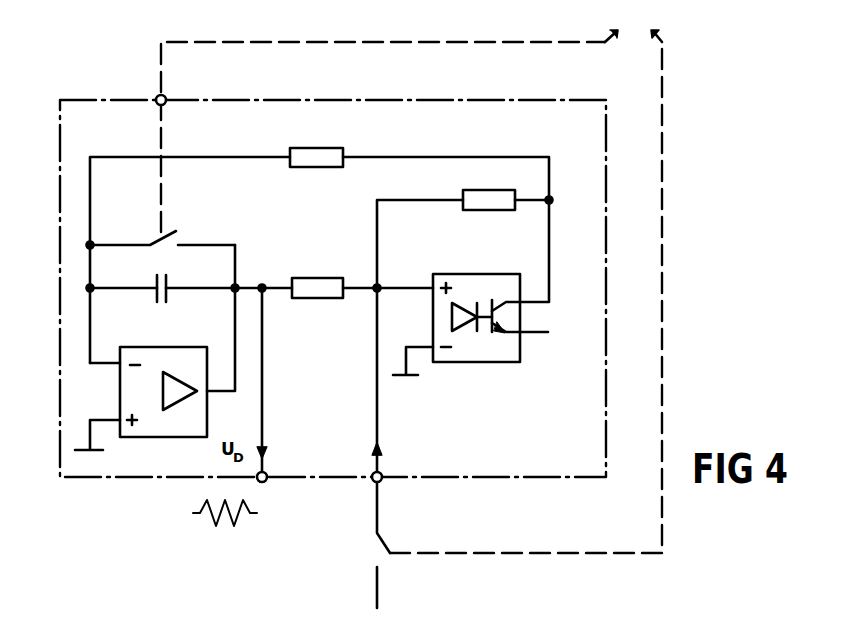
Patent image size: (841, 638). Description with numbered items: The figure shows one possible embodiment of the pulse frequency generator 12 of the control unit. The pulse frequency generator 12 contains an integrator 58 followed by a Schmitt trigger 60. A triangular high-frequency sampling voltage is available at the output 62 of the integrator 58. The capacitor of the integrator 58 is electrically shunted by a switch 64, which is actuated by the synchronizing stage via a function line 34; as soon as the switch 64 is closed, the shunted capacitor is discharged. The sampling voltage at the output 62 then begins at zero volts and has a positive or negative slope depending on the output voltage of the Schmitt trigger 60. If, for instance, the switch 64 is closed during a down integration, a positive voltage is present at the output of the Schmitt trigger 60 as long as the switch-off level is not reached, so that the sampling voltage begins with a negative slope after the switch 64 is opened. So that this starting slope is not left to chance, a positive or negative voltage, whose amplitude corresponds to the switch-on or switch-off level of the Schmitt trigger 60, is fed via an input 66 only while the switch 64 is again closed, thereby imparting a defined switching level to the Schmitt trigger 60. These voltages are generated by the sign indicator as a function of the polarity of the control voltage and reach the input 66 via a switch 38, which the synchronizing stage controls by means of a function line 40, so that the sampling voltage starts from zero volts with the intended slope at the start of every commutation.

The pulse frequency generator 12 is at (508, 477).
The function line 34 is at (452, 42).
The switch 38 is at (379, 549).
The function line 40 is at (662, 168).
The integrator 58 is at (148, 328).
The Schmitt trigger 60 is at (452, 248).
The output 62 is at (266, 481).
The switch 64 is at (162, 232).
The input 66 is at (381, 481).